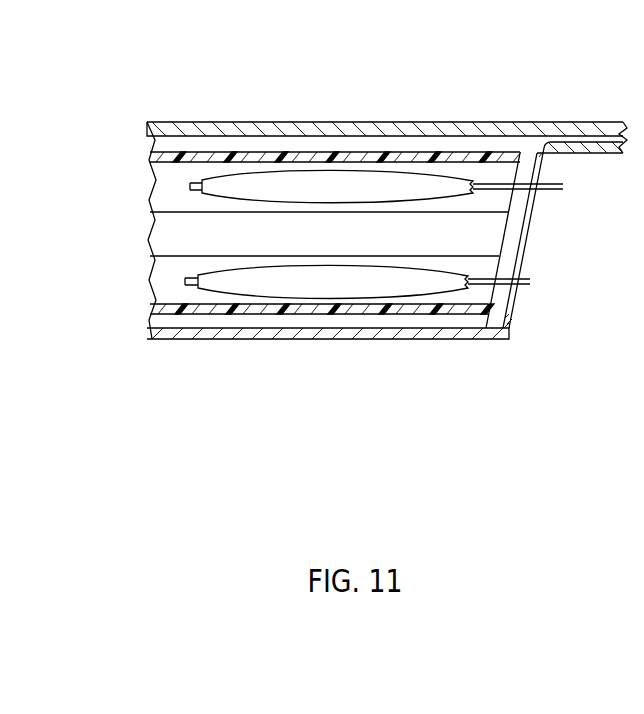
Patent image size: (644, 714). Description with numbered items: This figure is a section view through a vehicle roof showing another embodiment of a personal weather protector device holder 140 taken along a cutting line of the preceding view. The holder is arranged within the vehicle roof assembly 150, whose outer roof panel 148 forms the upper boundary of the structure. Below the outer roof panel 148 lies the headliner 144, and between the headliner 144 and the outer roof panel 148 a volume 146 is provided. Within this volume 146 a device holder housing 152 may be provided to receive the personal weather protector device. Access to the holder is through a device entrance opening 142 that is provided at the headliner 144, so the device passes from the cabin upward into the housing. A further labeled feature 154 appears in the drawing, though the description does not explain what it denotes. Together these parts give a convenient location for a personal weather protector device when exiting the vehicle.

The personal weather protector device holder 140 is at (139, 240).
The device entrance opening 142 is at (539, 242).
The headliner 144 is at (417, 339).
The volume 146 is at (237, 146).
The outer roof panel 148 is at (384, 131).
The vehicle roof assembly 150 is at (489, 105).
The device holder housing 152 is at (236, 324).
The top cover assembly 154 is at (155, 95).